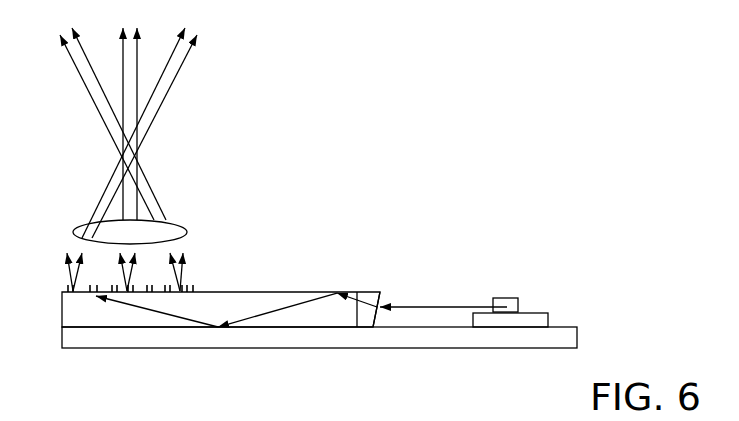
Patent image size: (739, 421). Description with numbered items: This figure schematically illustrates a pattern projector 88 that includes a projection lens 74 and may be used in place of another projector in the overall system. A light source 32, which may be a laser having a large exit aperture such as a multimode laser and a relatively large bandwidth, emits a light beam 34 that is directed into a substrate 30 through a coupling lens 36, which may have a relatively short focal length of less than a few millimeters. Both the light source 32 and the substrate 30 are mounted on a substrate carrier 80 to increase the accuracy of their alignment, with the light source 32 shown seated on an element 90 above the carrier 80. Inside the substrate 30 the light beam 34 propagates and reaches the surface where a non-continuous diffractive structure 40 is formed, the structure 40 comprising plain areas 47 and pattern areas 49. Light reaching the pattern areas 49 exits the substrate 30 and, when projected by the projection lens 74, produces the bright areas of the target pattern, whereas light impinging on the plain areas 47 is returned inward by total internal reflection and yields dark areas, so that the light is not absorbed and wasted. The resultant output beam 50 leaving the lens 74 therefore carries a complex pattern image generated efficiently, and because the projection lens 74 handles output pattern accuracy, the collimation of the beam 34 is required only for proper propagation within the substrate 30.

The pattern projector 88 is at (590, 113).
The output beam 50 is at (188, 52).
The projection lens 74 is at (187, 233).
The substrate 30 is at (270, 292).
The coupling lens 36 is at (375, 292).
The light beam 34 is at (427, 307).
The light source 32 is at (508, 298).
The mount 90 is at (542, 313).
The substrate carrier 80 is at (323, 348).
The diffractive structure 40 is at (93, 302).
The pattern areas 49 is at (127, 292).
The plain areas 47 is at (155, 292).